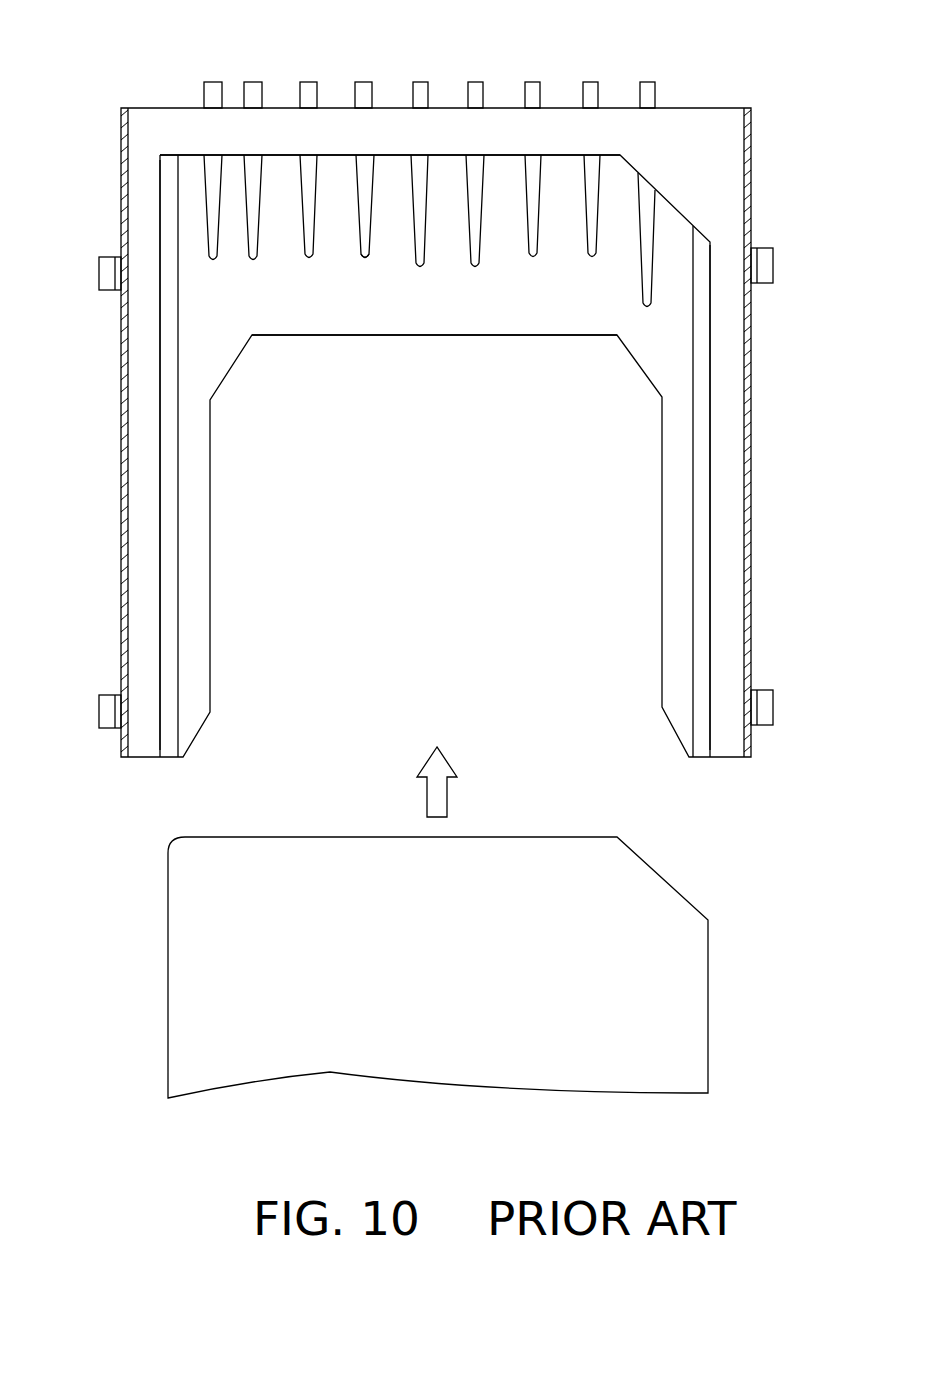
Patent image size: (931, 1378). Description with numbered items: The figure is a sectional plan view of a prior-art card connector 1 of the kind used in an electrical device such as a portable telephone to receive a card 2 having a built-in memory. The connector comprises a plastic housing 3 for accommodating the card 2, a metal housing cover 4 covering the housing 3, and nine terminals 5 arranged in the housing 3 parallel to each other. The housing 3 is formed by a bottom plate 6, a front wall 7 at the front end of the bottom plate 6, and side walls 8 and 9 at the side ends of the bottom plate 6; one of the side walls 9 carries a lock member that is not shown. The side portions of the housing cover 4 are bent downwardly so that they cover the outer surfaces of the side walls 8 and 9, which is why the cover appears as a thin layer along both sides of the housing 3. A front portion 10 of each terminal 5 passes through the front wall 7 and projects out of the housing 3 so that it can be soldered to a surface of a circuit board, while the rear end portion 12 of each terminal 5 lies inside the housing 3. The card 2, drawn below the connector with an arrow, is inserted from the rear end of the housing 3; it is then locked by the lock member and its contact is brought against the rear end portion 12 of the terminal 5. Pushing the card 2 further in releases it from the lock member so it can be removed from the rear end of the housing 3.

The card connector 1 is at (464, 378).
The card 2 is at (685, 962).
The housing 3 is at (705, 108).
The housing cover 4 is at (752, 143).
The terminal 5 is at (477, 76).
The bottom plate 6 is at (458, 312).
The front wall 7 is at (615, 132).
The side wall 8 is at (145, 395).
The side wall 9 is at (723, 357).
The front portion 10 is at (362, 90).
The rear end portion 12 is at (363, 260).